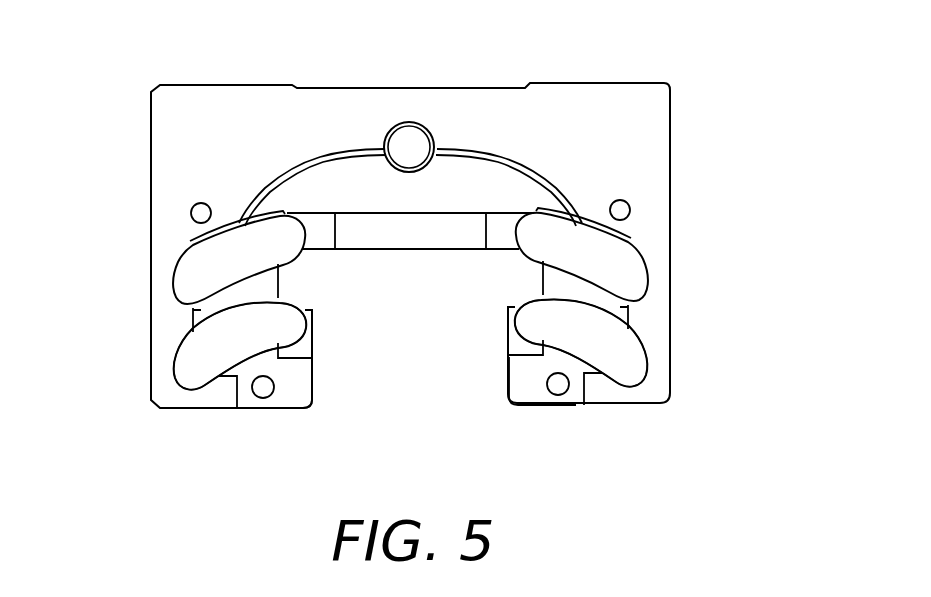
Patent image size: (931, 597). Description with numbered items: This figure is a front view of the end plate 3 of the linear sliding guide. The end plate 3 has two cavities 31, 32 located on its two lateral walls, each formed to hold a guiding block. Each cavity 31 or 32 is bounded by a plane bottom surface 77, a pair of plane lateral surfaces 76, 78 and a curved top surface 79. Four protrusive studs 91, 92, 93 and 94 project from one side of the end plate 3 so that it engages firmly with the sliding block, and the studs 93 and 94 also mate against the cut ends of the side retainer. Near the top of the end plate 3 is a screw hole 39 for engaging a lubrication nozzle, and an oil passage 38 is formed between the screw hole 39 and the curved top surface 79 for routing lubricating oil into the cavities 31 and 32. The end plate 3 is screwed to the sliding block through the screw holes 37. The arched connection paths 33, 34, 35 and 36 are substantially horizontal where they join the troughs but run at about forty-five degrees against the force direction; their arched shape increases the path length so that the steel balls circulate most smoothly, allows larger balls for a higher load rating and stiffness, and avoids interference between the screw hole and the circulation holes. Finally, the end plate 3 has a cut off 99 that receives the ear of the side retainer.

The end plate 3 is at (190, 115).
The cavity 31 is at (622, 310).
The cavity 32 is at (190, 317).
The connection path 33 is at (628, 272).
The connection path 34 is at (193, 283).
The connection path 35 is at (630, 353).
The connection path 36 is at (190, 354).
The screw hole 37 is at (193, 205).
The oil passage 38 is at (320, 153).
The screw hole 39 is at (407, 138).
The plane lateral surface 76 is at (287, 279).
The plane bottom surface 77 is at (220, 381).
The plane lateral surface 78 is at (195, 322).
The curved top surface 79 is at (228, 205).
The protrusive stud 91 is at (487, 233).
The protrusive stud 92 is at (330, 232).
The protrusive stud 93 is at (517, 343).
The protrusive stud 94 is at (302, 343).
The cut off 99 is at (290, 395).